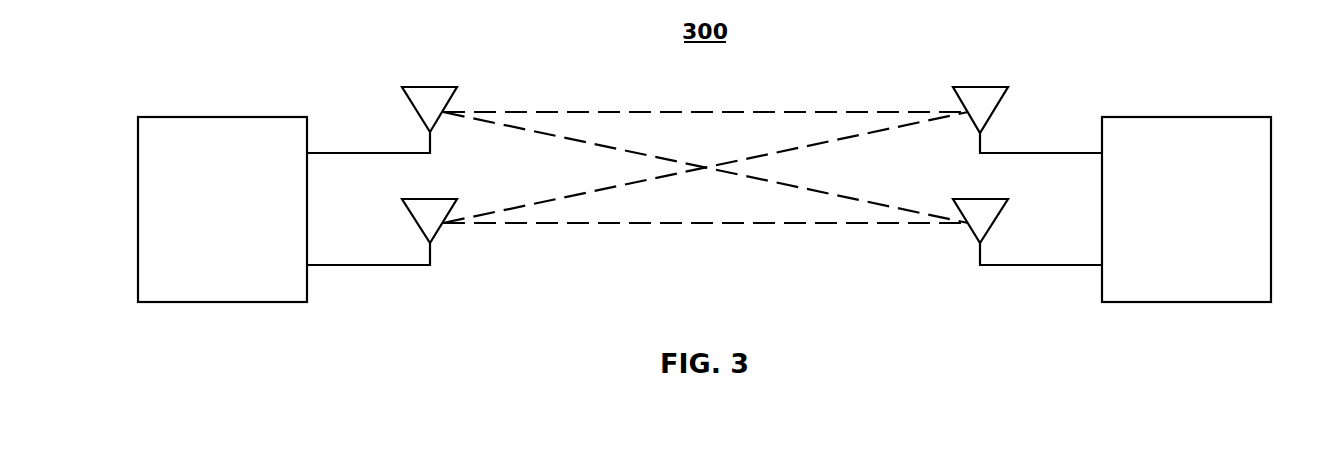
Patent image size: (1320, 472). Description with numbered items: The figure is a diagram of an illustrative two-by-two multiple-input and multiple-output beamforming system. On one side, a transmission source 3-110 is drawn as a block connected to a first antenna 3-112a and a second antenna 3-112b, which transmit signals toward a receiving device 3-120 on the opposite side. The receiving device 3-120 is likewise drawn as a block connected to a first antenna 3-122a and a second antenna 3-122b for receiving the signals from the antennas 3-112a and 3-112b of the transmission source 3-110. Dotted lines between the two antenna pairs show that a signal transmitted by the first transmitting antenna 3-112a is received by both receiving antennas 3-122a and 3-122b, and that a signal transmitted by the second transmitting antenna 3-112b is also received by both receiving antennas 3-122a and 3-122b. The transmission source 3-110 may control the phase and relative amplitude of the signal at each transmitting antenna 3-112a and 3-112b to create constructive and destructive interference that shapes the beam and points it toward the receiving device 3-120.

The transmission source 3-110 is at (222, 115).
The receiving device 3-120 is at (1188, 115).
The first antenna 3-112a is at (412, 107).
The second antenna 3-112b is at (412, 218).
The first antenna 3-122a is at (995, 107).
The second antenna 3-122b is at (995, 218).